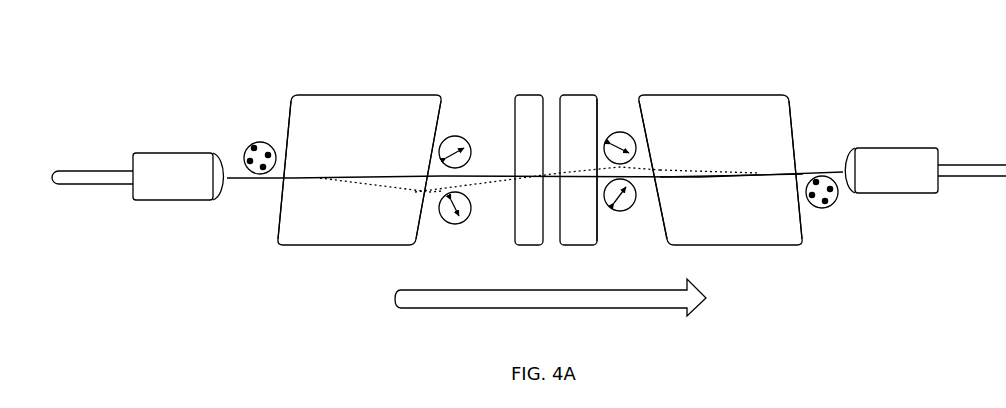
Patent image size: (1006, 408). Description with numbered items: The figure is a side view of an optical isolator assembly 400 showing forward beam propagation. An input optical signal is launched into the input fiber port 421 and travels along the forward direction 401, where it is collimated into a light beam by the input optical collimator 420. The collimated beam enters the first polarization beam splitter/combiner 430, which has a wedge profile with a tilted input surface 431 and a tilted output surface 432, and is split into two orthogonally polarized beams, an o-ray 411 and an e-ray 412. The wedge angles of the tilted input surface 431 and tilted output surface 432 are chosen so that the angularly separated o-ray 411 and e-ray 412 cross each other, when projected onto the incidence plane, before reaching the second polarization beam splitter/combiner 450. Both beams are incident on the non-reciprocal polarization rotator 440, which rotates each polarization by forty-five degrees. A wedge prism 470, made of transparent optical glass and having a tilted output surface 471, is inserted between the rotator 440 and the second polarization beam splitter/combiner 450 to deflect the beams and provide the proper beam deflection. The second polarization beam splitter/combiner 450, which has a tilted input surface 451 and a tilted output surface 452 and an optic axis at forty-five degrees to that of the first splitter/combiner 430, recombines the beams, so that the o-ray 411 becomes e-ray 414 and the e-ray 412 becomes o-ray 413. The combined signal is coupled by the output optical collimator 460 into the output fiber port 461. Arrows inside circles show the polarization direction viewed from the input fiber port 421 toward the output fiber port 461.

The optical isolator assembly 400 is at (918, 52).
The forward direction 401 is at (457, 309).
The o-ray 411 is at (360, 178).
The e-ray 412 is at (357, 189).
The o-ray 413 is at (710, 169).
The e-ray 414 is at (712, 182).
The input optical collimator 420 is at (173, 185).
The input fiber port 421 is at (117, 170).
The first polarization beam splitter/combiner 430 is at (356, 223).
The tilted input surface 431 is at (284, 112).
The tilted output surface 432 is at (443, 112).
The non-reciprocal polarization rotator 440 is at (529, 229).
The second polarization beam splitter/combiner 450 is at (766, 233).
The tilted input surface 451 is at (636, 112).
The tilted output surface 452 is at (795, 110).
The output optical collimator 460 is at (899, 183).
The output fiber port 461 is at (998, 165).
The wedge prism 470 is at (576, 229).
The tilted output surface 471 is at (594, 112).